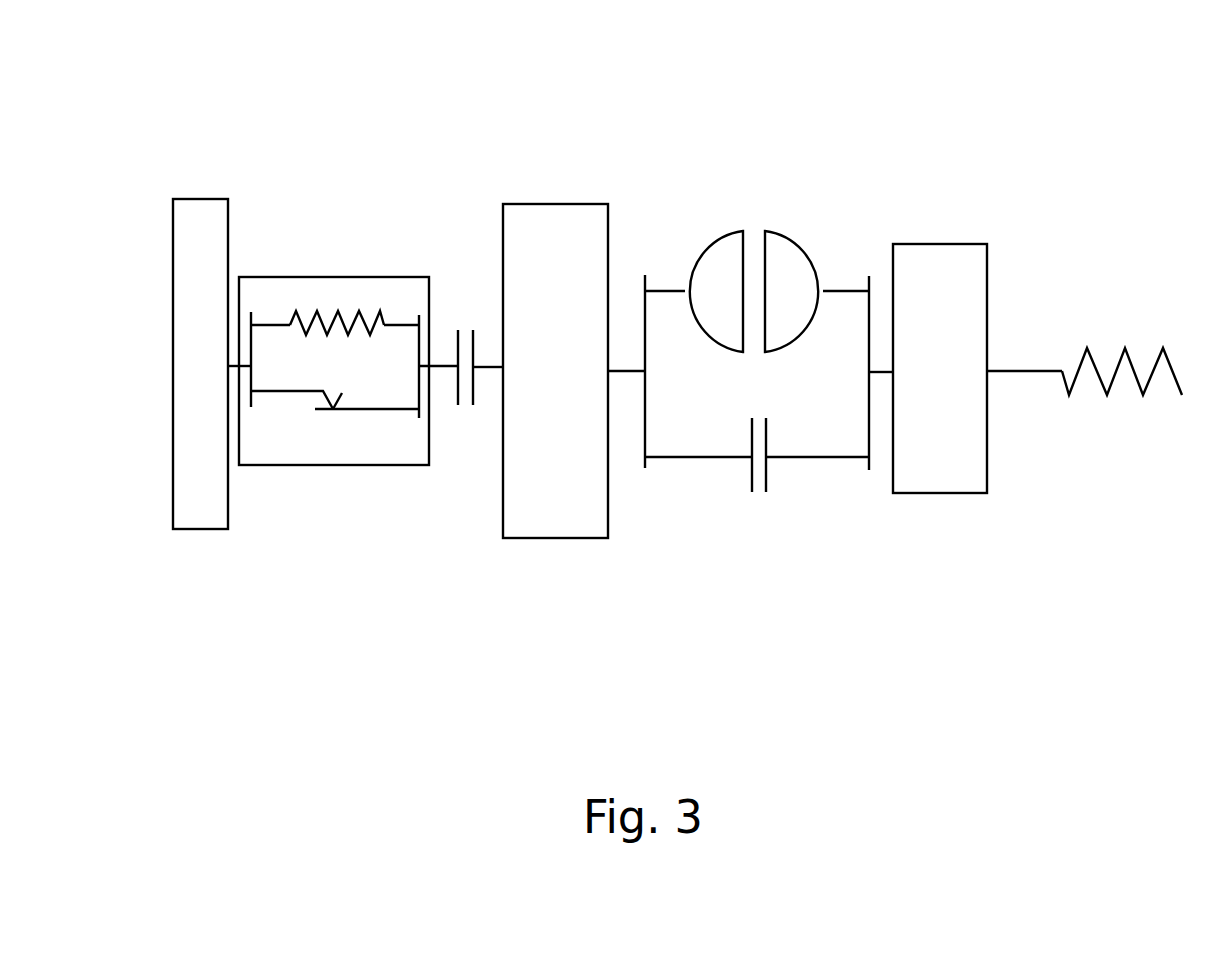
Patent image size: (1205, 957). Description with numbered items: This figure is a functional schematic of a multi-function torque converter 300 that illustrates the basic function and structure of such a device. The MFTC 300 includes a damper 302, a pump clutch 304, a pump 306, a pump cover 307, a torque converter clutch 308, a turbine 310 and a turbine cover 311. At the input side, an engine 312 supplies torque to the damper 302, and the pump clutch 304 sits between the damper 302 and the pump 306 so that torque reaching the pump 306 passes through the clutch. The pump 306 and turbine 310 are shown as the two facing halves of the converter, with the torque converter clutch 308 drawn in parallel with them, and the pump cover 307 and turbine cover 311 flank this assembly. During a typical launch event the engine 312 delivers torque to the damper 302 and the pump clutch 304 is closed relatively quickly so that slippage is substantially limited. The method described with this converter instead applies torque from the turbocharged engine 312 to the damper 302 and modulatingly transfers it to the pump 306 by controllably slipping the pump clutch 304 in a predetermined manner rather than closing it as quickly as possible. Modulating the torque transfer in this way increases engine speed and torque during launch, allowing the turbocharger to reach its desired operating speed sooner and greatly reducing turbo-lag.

The multi-function torque converter 300 is at (639, 133).
The damper 302 is at (328, 295).
The pump clutch 304 is at (458, 333).
The pump 306 is at (718, 263).
The pump cover 307 is at (560, 238).
The torque converter clutch 308 is at (750, 477).
The turbine 310 is at (792, 263).
The turbine cover 311 is at (947, 264).
The engine 312 is at (199, 198).